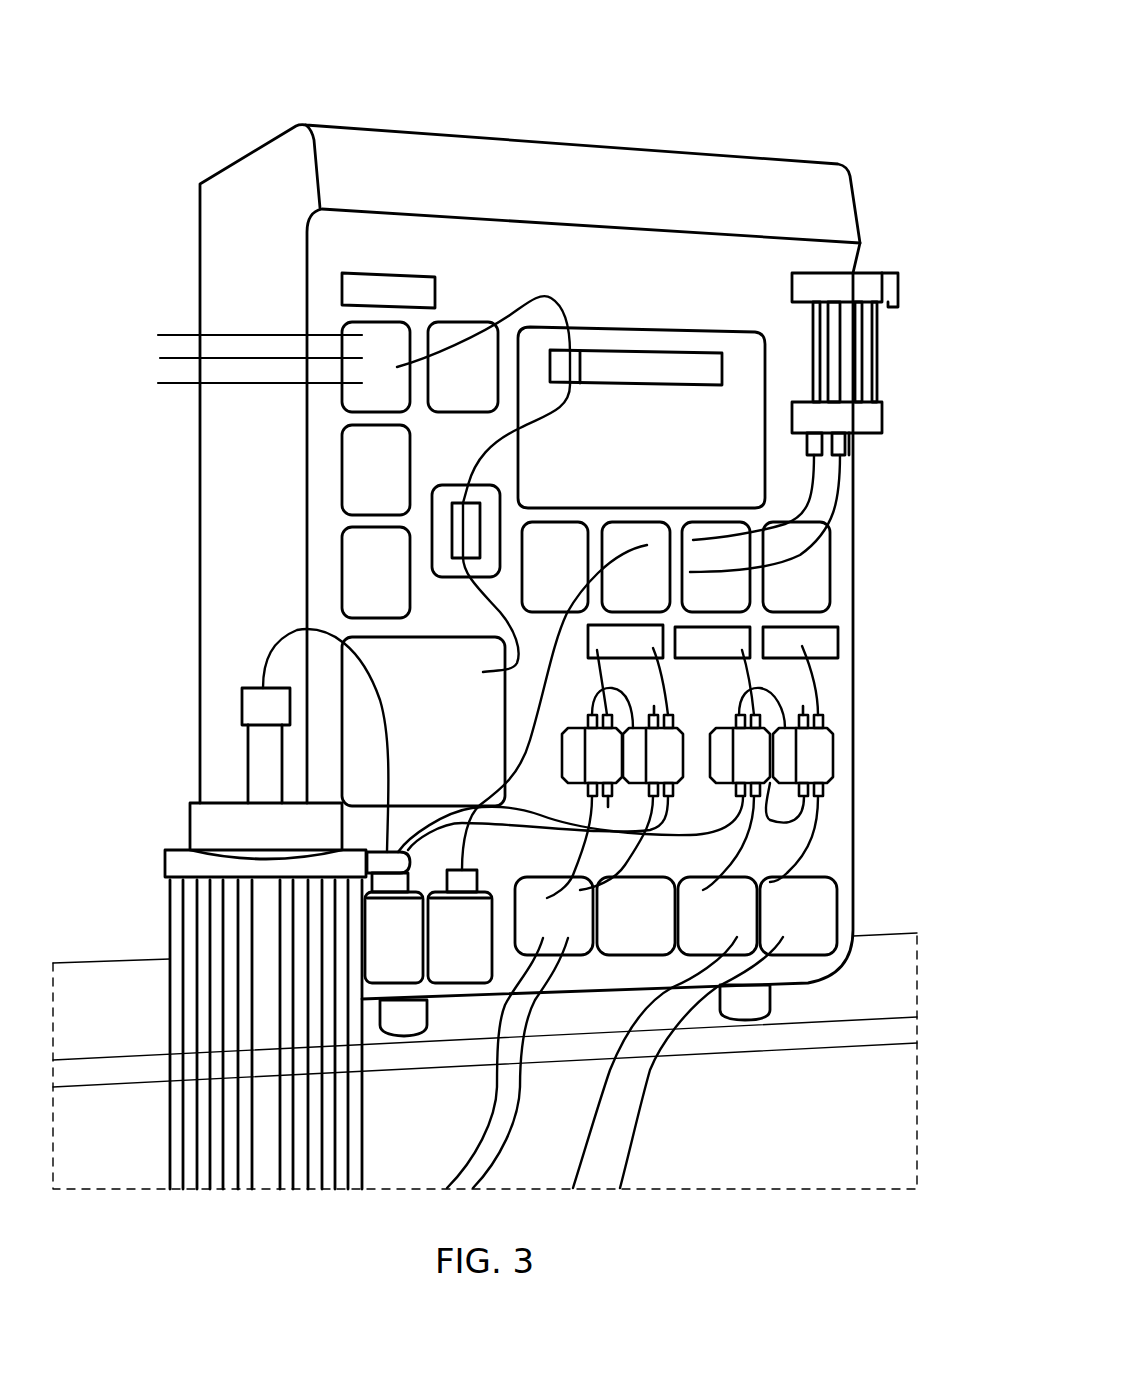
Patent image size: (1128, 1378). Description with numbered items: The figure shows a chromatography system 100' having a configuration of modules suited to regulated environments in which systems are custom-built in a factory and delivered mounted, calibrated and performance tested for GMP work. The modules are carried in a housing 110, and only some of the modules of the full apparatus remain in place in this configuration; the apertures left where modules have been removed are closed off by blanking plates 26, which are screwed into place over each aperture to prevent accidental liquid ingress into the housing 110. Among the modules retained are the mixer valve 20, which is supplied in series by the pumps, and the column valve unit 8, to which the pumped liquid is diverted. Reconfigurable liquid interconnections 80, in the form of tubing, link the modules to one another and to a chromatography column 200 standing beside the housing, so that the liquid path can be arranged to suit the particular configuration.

The system 100' is at (488, 598).
The housing 110 is at (540, 143).
The mixer valve 20 is at (693, 348).
The tubular interconnections 80 is at (158, 383).
The blanking plates 26 is at (353, 405).
The column valve unit 8 is at (363, 728).
The chromatography column 200 is at (263, 935).